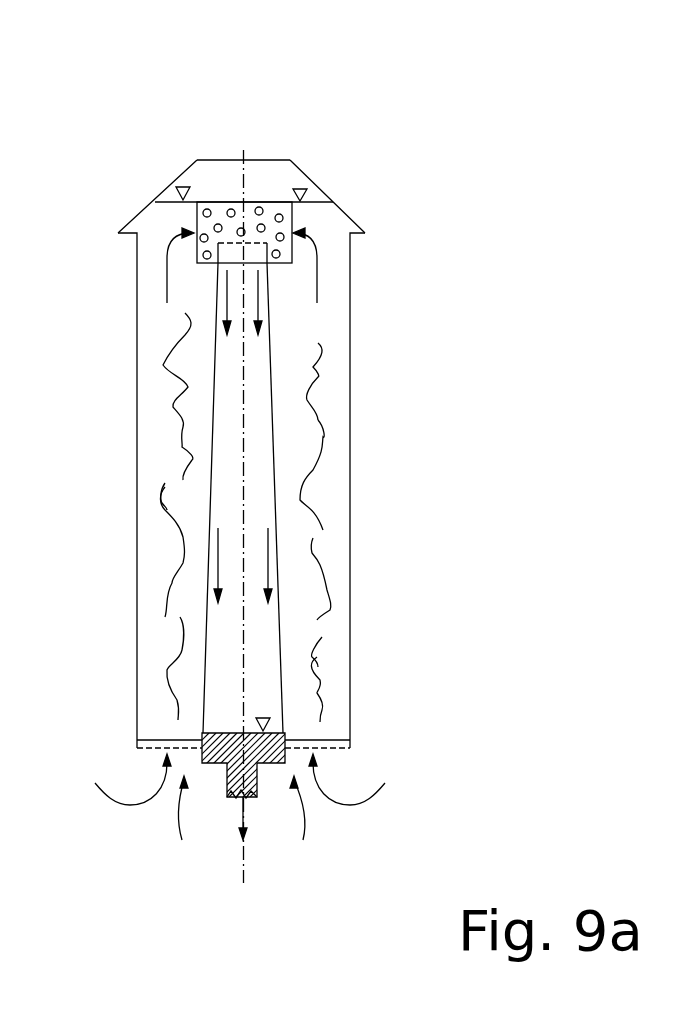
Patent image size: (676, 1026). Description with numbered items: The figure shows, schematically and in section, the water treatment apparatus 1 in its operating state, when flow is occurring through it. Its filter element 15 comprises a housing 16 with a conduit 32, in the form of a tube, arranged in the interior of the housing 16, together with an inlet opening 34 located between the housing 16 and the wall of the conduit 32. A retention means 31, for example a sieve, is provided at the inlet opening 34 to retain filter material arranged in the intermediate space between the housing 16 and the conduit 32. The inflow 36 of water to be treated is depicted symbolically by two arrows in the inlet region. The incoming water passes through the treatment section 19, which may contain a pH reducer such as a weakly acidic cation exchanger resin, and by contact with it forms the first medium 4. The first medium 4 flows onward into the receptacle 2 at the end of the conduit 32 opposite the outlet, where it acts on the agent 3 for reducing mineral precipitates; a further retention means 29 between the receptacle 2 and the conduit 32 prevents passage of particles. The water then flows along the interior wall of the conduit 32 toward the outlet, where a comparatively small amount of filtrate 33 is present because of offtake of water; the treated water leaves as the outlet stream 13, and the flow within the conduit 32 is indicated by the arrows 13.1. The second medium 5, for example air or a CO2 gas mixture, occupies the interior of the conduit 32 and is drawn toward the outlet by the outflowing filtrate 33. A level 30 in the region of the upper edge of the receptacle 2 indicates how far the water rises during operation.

The water treatment apparatus 1 is at (115, 95).
The second receptacle 2 is at (258, 190).
The agent for reducing mineral precipitates 3 is at (228, 209).
The first medium 4 is at (167, 263).
The second medium 5 is at (257, 412).
The outlet stream 13 is at (243, 815).
The stream 13.1 is at (268, 558).
The filter element 15 is at (145, 192).
The housing 16 is at (137, 455).
The treatment section 19 is at (302, 488).
The retention means 29 is at (248, 247).
The level 30 is at (183, 187).
The retention means 31 is at (157, 740).
The conduit 32 is at (283, 643).
The filtrate 33 is at (223, 733).
The inlet opening 34 is at (246, 824).
The inflow 36 is at (117, 806).